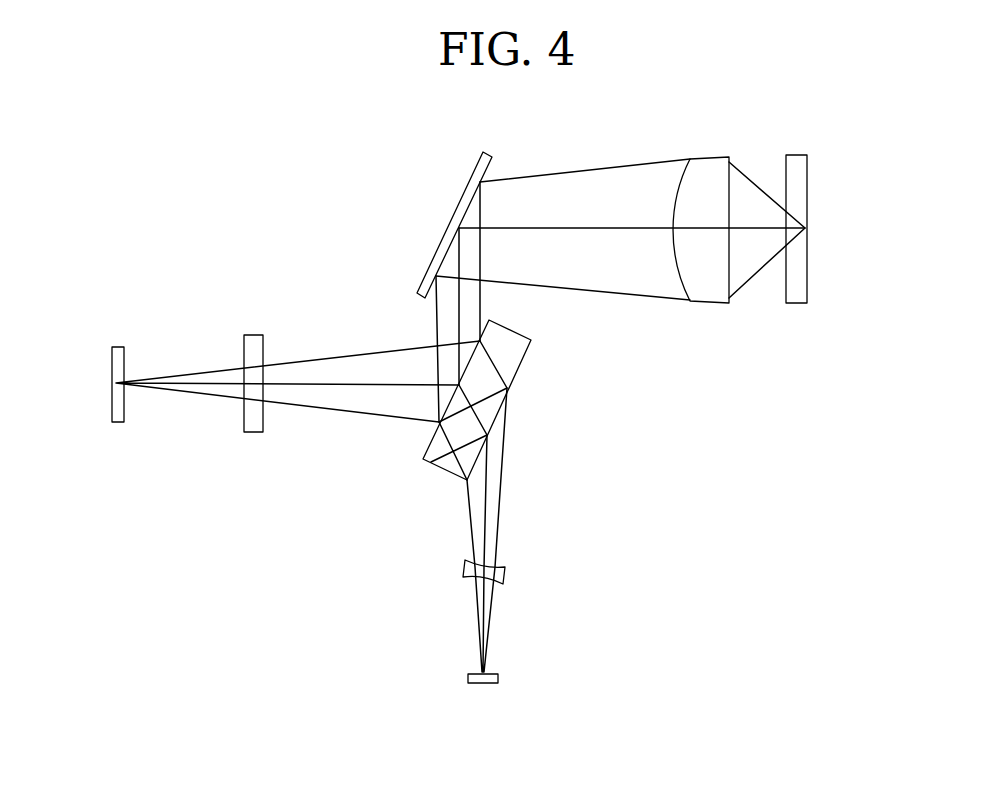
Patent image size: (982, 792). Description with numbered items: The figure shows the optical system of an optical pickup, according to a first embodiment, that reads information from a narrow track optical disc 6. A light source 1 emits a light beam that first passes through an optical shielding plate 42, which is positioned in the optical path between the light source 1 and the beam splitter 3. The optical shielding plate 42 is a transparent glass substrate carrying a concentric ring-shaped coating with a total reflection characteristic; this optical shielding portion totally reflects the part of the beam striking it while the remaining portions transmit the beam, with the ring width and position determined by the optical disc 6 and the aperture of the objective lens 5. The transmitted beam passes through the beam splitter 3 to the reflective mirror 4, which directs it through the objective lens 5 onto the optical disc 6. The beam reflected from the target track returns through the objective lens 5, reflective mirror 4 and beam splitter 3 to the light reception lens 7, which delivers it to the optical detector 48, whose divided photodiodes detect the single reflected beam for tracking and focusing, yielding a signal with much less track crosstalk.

The light source 1 is at (123, 347).
The optical shielding plate 42 is at (261, 336).
The beam splitter 3 is at (516, 374).
The reflective mirror 4 is at (458, 198).
The objective lens 5 is at (708, 153).
The optical disc 6 is at (807, 155).
The light reception lens 7 is at (505, 576).
The optical detector 48 is at (499, 672).